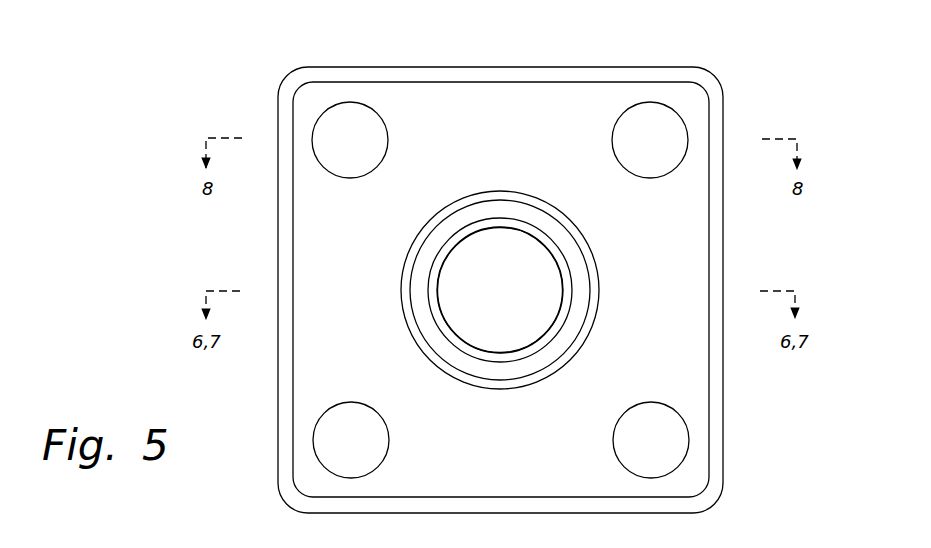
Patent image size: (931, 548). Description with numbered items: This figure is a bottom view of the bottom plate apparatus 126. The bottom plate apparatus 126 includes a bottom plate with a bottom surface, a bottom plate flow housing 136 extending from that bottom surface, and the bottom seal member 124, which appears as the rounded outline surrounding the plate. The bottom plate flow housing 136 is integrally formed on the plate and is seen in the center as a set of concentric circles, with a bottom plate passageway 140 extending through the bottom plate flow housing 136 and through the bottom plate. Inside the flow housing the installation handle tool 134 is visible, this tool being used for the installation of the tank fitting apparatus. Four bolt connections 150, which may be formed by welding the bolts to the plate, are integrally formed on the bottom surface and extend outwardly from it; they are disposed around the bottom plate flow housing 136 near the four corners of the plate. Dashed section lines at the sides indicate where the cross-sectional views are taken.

The bottom seal member 124 is at (717, 76).
The bottom plate apparatus 126 is at (203, 81).
The installation handle tool 134 is at (563, 291).
The bottom plate flow housing 136 is at (600, 292).
The bottom plate passageway 140 is at (500, 246).
The bolt connections 150 is at (388, 140).